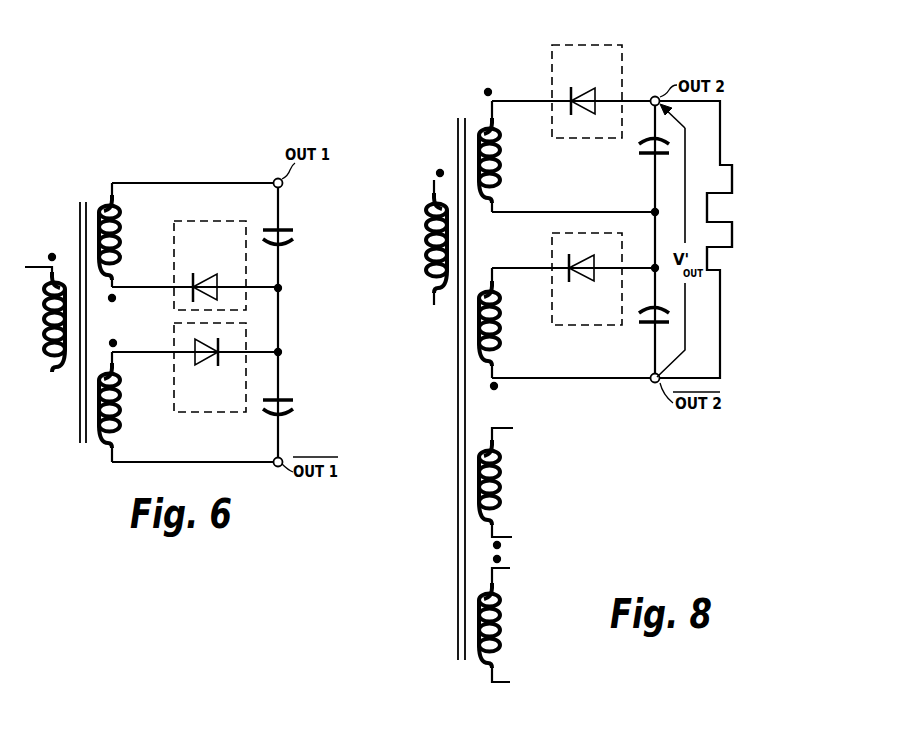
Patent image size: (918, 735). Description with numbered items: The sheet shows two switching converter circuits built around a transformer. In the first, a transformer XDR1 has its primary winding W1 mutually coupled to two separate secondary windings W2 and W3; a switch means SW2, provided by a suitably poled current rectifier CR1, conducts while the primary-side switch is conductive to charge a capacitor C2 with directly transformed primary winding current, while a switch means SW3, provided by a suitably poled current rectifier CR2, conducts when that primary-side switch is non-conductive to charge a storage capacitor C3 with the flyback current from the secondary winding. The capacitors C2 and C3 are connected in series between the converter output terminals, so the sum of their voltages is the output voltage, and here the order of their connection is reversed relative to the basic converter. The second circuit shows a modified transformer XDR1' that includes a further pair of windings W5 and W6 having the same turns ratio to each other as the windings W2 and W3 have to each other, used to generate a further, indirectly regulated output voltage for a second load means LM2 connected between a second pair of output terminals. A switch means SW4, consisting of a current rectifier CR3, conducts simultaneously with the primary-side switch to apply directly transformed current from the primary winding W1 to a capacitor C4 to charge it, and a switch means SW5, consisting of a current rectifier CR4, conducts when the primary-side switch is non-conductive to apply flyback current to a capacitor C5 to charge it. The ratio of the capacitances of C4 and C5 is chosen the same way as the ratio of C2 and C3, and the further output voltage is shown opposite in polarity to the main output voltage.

In FIG. 6, the transformer XDR1 is at (74, 300).
In FIG. 8, the modified transformer XDR1' is at (459, 353).
In FIG. 6, the primary winding W1 is at (46, 325).
In FIG. 8, the primary winding W1 is at (426, 246).
In FIG. 6, the secondary winding W2 is at (122, 236).
In FIG. 8, the secondary winding W2 is at (500, 630).
In FIG. 6, the secondary winding W3 is at (123, 405).
In FIG. 8, the secondary winding W3 is at (499, 489).
In FIG. 8, the further winding W5 is at (501, 332).
In FIG. 8, the further winding W6 is at (501, 163).
In FIG. 6, the current rectifier CR1 is at (205, 271).
In FIG. 6, the current rectifier CR2 is at (201, 366).
In FIG. 8, the current rectifier CR3 is at (582, 285).
In FIG. 8, the current rectifier CR4 is at (586, 87).
In FIG. 6, the switch means SW2 is at (194, 221).
In FIG. 6, the switch means SW3 is at (197, 412).
In FIG. 8, the switch means SW4 is at (584, 325).
In FIG. 8, the switch means SW5 is at (622, 63).
In FIG. 6, the capacitor C2 is at (290, 238).
In FIG. 6, the storage capacitor C3 is at (290, 410).
In FIG. 8, the capacitor C4 is at (637, 322).
In FIG. 8, the capacitor C5 is at (641, 148).
In FIG. 8, the second load means LM2 is at (731, 208).